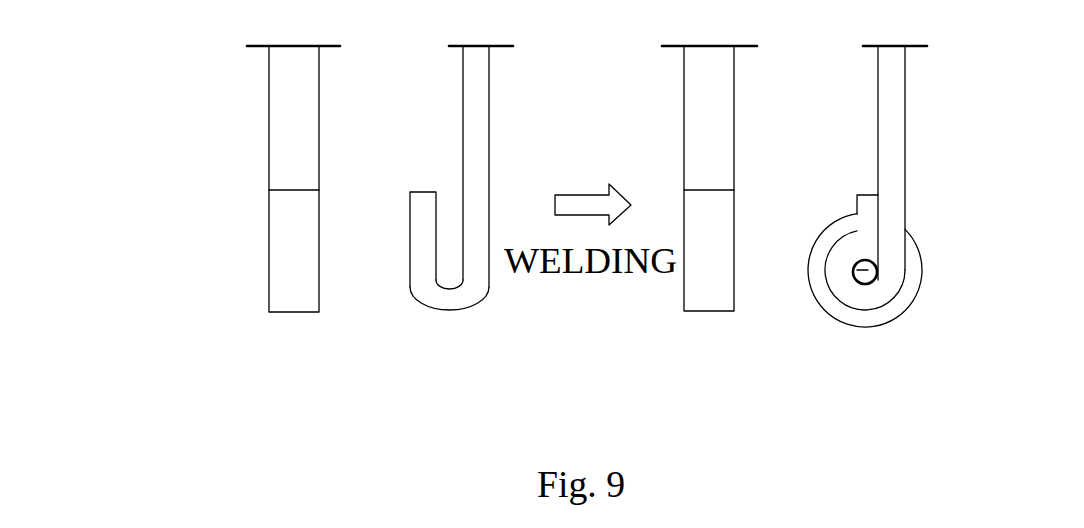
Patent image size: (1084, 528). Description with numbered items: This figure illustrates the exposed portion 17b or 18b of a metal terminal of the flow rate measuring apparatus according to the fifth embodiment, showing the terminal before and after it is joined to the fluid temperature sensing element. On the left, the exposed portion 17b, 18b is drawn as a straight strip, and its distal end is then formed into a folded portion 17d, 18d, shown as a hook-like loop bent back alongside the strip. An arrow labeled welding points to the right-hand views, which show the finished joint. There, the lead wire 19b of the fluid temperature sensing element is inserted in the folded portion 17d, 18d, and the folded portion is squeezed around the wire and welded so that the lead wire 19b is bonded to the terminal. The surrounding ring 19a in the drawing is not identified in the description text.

The exposed portion 17b is at (211, 179).
The exposed portion 18b is at (288, 155).
The folded portion 17d is at (440, 226).
The folded portion 18d is at (450, 310).
The outer welded ring 19a is at (892, 322).
The lead wire 19b is at (858, 272).